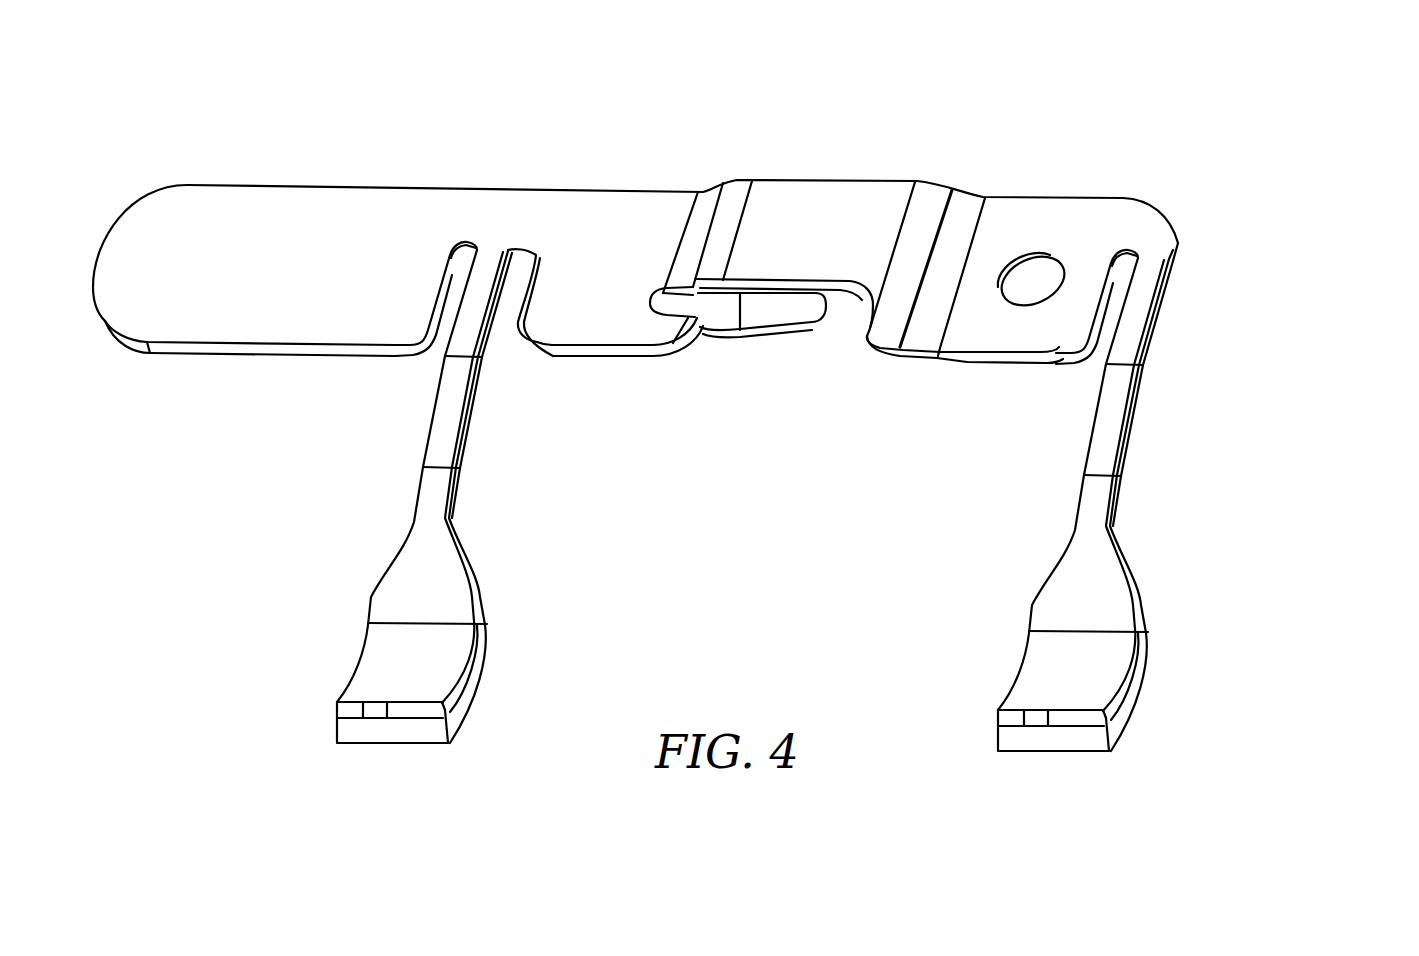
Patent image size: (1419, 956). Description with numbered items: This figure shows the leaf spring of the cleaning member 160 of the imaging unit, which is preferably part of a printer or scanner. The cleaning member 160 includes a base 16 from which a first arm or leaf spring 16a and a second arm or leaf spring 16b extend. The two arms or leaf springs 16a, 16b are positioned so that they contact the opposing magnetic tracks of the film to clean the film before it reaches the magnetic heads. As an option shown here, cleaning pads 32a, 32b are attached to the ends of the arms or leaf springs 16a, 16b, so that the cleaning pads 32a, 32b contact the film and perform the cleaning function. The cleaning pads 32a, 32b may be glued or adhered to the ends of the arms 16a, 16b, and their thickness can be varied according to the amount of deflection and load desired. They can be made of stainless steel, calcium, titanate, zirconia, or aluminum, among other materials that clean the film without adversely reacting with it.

The cleaning member 160 is at (1224, 231).
The base 16 is at (583, 222).
The first arm or leaf spring 16a is at (377, 650).
The second arm or leaf spring 16b is at (1108, 660).
The cleaning pad 32a is at (390, 737).
The cleaning pad 32b is at (1077, 743).